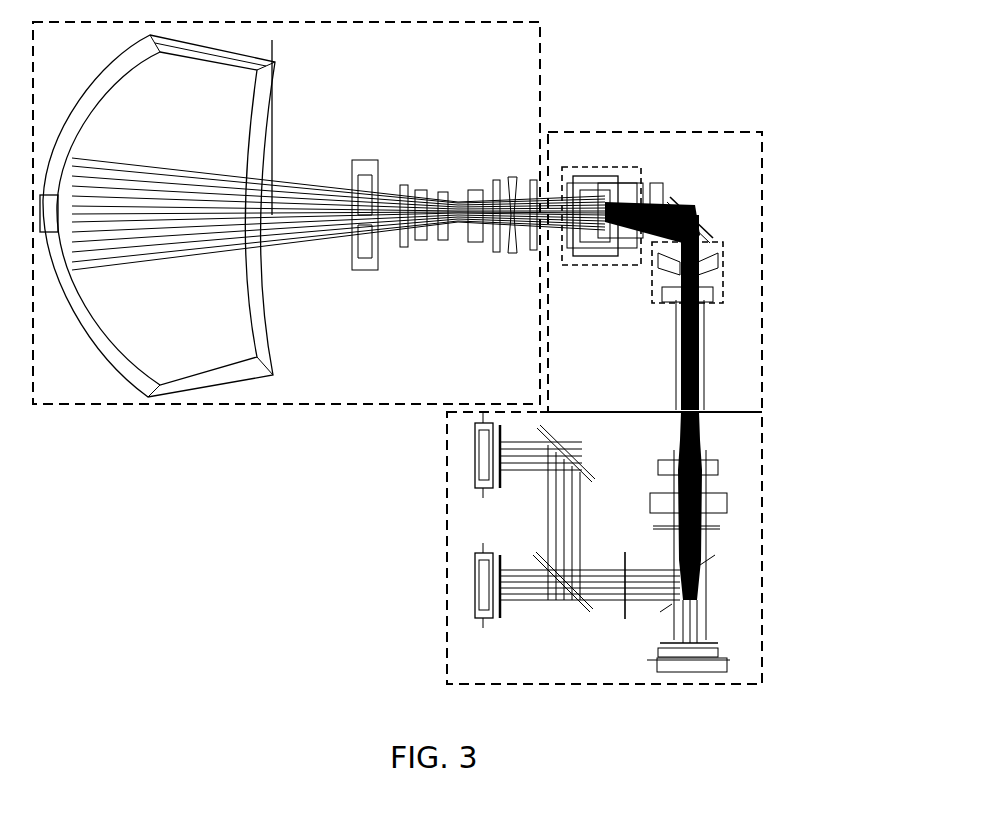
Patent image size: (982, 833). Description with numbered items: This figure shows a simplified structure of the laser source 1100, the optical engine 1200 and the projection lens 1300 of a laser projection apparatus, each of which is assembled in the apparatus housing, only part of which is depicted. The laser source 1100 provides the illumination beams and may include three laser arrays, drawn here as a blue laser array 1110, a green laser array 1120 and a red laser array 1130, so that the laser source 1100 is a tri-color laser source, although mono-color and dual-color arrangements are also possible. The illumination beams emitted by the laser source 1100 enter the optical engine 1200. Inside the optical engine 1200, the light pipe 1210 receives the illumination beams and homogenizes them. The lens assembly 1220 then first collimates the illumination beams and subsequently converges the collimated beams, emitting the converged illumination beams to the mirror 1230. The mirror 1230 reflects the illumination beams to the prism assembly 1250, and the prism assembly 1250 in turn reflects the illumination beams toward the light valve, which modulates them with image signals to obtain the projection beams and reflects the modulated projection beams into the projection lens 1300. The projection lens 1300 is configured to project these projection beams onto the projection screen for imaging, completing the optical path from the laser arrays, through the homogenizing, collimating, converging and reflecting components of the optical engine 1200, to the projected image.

The projection lens 1300 is at (540, 88).
The optical engine 1200 is at (763, 178).
The prism assembly 1250 is at (601, 166).
The mirror 1230 is at (688, 213).
The lens assembly 1220 is at (723, 283).
The light pipe 1210 is at (700, 383).
The laser source 1100 is at (763, 472).
The blue laser array 1110 is at (477, 455).
The green laser array 1120 is at (477, 574).
The red laser array 1130 is at (705, 662).